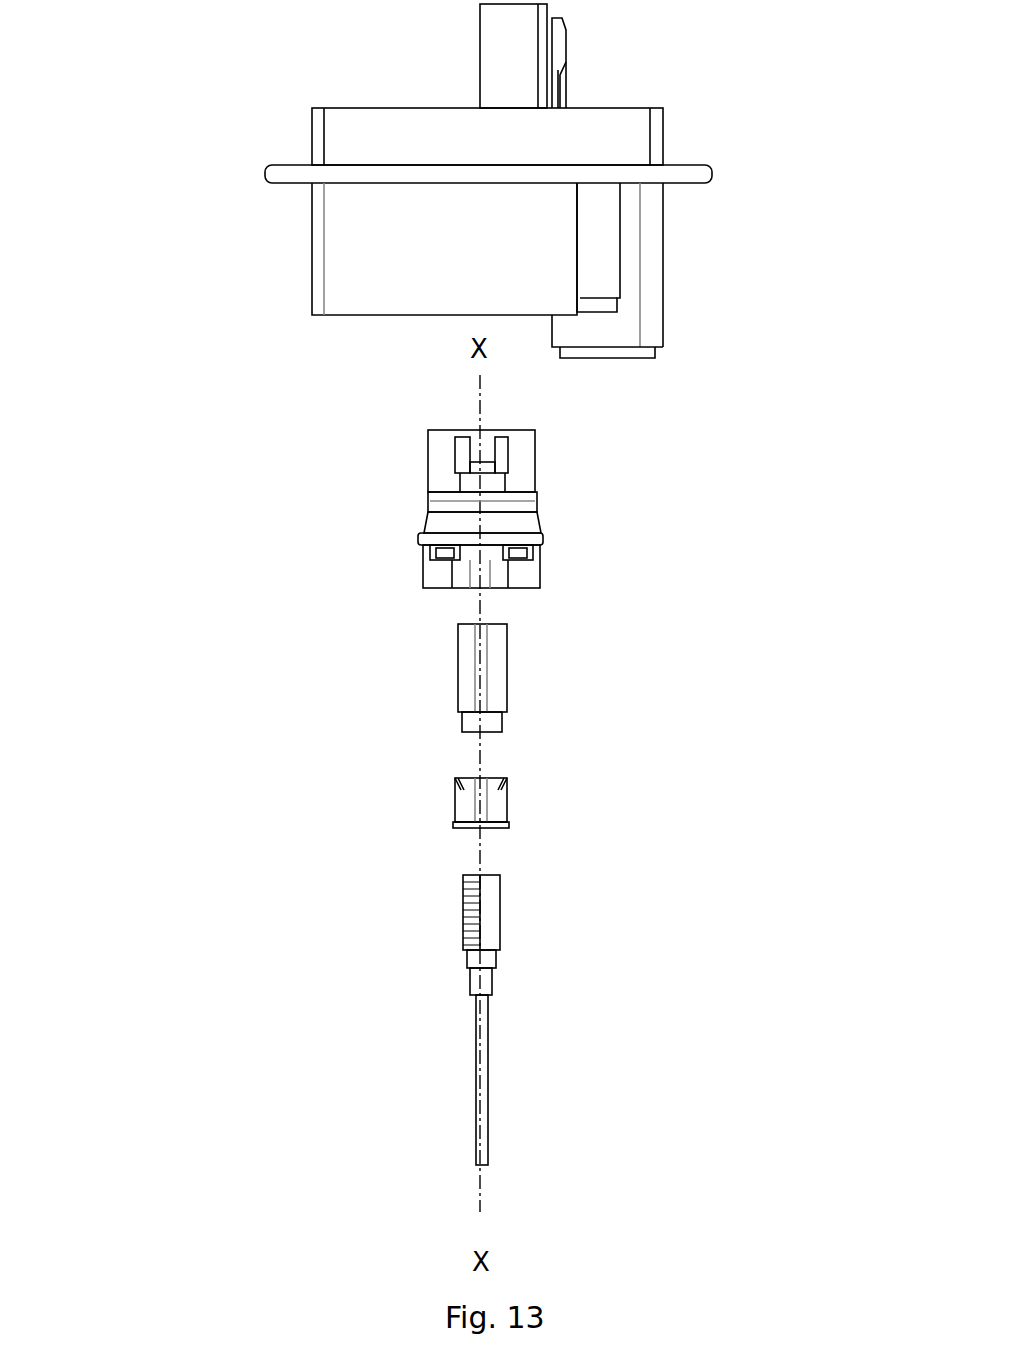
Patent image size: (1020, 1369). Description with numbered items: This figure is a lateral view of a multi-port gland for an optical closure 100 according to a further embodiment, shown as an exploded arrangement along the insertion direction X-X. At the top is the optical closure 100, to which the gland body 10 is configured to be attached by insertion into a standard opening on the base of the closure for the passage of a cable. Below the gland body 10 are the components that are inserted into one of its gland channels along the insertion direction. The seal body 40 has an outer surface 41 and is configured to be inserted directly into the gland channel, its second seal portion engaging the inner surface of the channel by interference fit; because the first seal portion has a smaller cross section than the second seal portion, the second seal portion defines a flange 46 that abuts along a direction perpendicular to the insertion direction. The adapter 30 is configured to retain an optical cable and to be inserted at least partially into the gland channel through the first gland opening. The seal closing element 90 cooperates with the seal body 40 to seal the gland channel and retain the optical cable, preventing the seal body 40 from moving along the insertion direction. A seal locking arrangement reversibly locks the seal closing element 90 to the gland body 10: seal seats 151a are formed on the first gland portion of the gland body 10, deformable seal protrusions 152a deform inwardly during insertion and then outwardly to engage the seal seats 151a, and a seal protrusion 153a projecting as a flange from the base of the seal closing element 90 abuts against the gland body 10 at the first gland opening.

The optical closure 100 is at (300, 237).
The gland body 10 is at (454, 536).
The seal seat 151a is at (361, 593).
The seal body 40 is at (448, 699).
The outer surface 41 is at (500, 672).
The flange 46 is at (460, 715).
The adapter 30 is at (494, 887).
The deformable seal protrusion 152a is at (453, 788).
The seal protrusion 153a is at (453, 823).
The seal closing element 90 is at (447, 851).